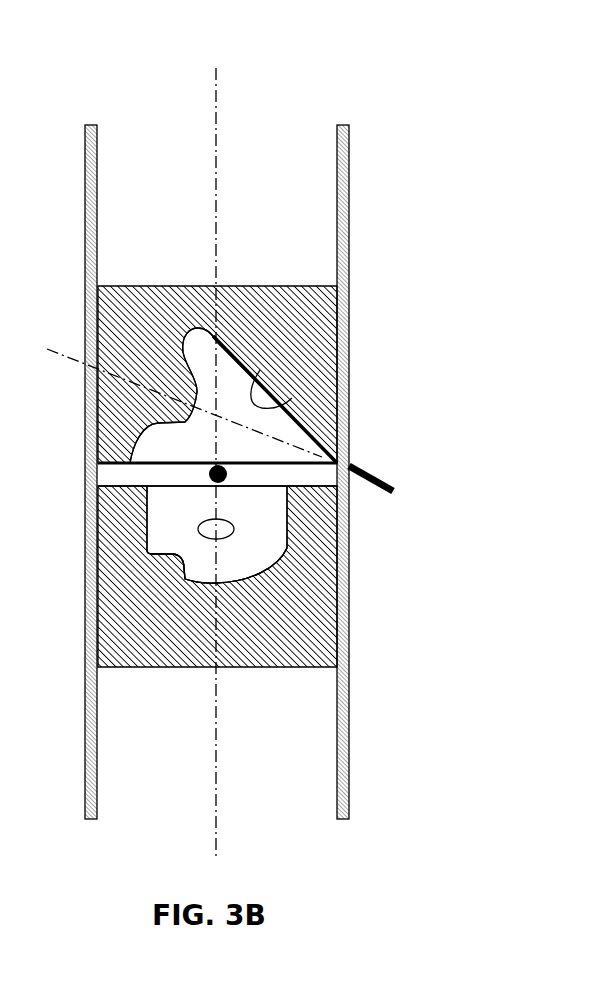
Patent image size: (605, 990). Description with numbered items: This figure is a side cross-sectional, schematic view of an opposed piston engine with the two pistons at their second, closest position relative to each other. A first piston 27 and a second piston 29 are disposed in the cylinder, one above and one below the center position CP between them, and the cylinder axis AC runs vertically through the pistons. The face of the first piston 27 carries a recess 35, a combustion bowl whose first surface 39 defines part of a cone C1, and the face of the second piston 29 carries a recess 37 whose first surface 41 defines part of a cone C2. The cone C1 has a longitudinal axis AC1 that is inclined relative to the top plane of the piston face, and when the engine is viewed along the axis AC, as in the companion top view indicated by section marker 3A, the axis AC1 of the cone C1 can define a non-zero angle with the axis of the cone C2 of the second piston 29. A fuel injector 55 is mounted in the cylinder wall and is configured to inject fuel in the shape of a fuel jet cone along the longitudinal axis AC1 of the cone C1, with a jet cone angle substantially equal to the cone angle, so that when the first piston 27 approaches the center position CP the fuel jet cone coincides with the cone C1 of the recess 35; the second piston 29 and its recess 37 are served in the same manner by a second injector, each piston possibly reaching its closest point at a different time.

The first piston 27 is at (157, 286).
The second piston 29 is at (270, 668).
The cone C1 is at (228, 388).
The cone C2 is at (258, 510).
The first surface 39 is at (292, 400).
The recess 35 is at (243, 440).
The center position CP is at (227, 472).
The fuel injector 55 is at (394, 490).
The recess 37 is at (262, 557).
The first surface 41 is at (150, 553).
The axis of the cylinder AC is at (216, 126).
The longitudinal axis AC1 is at (62, 355).
The section line 3A is at (82, 463).